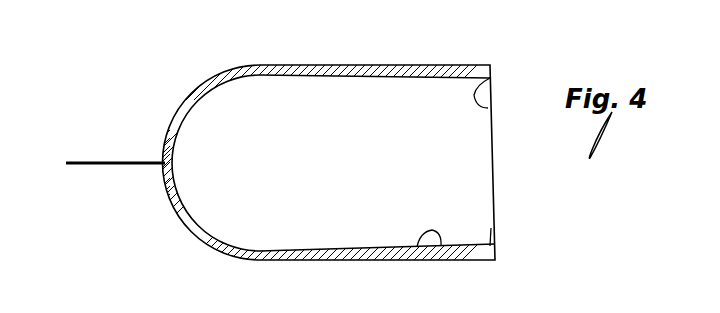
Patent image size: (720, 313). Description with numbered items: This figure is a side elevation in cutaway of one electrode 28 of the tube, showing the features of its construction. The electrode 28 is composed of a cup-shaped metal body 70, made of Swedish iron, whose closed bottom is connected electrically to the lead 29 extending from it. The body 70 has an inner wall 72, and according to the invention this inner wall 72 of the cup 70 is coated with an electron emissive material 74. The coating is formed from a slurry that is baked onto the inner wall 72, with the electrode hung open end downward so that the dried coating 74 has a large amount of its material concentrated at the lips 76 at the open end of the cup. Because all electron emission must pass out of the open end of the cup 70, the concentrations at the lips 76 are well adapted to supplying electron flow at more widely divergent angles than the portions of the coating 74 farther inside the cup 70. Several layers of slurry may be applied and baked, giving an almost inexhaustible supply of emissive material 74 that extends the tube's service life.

The electrode 28 is at (299, 170).
The lead 29 is at (142, 158).
The metal body 70 is at (282, 65).
The inner wall 72 is at (418, 246).
The electron emissive material 74 is at (443, 138).
The lips 76 is at (488, 108).